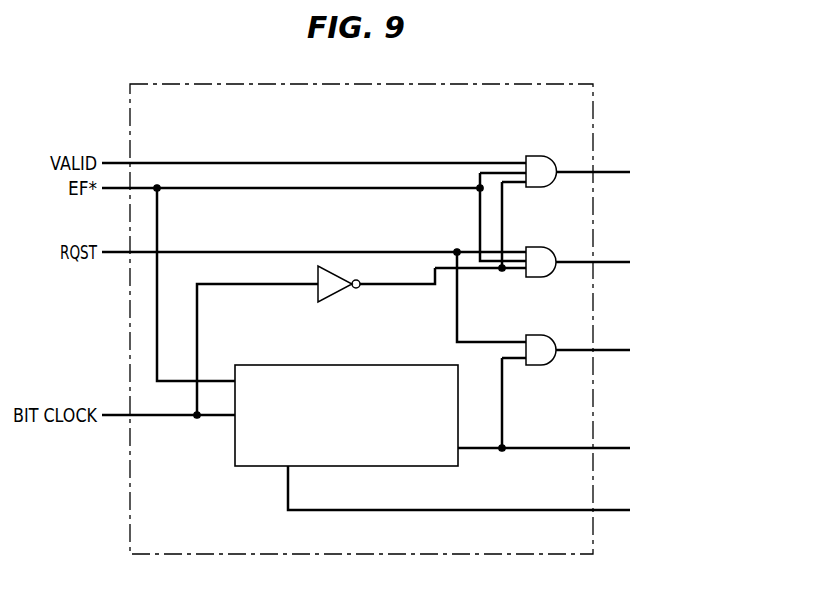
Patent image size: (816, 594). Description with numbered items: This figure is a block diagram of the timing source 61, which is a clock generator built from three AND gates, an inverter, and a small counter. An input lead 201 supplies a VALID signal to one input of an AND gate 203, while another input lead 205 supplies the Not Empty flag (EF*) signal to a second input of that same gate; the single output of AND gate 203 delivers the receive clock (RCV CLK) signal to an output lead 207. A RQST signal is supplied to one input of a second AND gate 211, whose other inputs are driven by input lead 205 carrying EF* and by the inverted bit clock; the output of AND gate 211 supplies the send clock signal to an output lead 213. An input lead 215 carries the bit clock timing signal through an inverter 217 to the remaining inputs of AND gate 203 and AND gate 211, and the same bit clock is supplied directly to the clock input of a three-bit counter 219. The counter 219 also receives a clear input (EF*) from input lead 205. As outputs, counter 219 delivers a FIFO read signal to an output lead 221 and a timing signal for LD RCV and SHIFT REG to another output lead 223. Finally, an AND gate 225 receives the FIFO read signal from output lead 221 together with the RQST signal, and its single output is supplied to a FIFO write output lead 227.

The timing source 61 is at (200, 84).
The input lead 201 is at (213, 163).
The input lead 205 is at (275, 188).
The AND gate 203 is at (546, 156).
The output lead 207 is at (610, 170).
The AND gate 211 is at (546, 247).
The output lead 213 is at (610, 260).
The inverter 217 is at (338, 295).
The 3-bit counter 219 is at (283, 365).
The input lead 215 is at (163, 417).
The AND gate 225 is at (546, 335).
The FIFO write output lead 227 is at (610, 348).
The output lead 221 is at (546, 448).
The output lead 223 is at (546, 510).